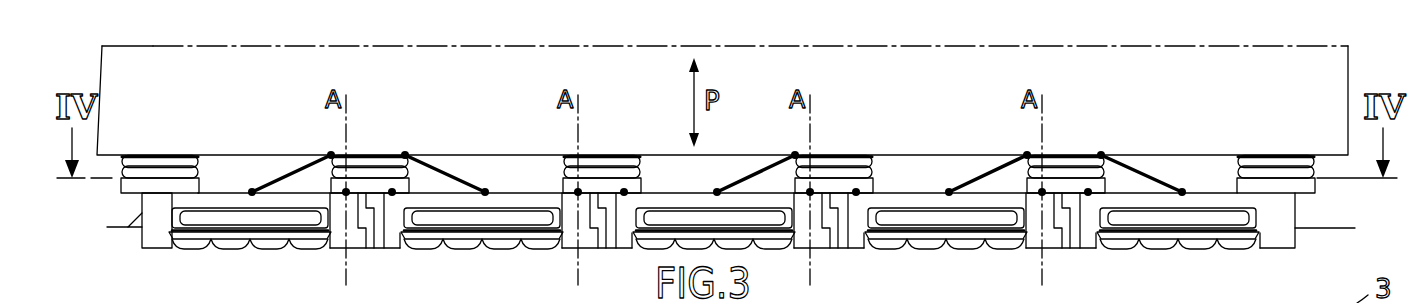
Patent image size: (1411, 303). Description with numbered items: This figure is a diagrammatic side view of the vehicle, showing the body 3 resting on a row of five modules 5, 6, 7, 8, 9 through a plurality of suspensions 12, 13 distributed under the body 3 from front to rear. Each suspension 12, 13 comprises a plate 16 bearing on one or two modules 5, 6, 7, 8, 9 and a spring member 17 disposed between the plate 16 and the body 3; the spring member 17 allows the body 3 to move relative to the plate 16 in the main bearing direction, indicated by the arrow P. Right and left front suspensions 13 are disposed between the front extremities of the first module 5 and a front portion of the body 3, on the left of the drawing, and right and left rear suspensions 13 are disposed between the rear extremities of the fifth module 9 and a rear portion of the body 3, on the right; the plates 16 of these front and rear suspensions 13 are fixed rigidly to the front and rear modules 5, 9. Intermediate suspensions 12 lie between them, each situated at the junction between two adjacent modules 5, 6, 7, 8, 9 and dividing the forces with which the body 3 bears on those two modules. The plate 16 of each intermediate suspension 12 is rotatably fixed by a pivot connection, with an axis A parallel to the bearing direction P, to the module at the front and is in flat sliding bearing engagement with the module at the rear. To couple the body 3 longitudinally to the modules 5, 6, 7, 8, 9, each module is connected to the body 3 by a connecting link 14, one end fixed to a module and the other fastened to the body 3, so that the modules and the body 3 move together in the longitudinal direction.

The body 3 is at (795, 62).
The first module 5 is at (157, 245).
The module 6 is at (388, 233).
The module 7 is at (618, 233).
The module 8 is at (849, 233).
The fifth module 9 is at (1081, 233).
The intermediate suspension 12 is at (392, 149).
The front and rear suspensions 13 is at (194, 150).
The connecting link 14 is at (280, 180).
The plate 16 is at (141, 187).
The spring member 17 is at (177, 167).